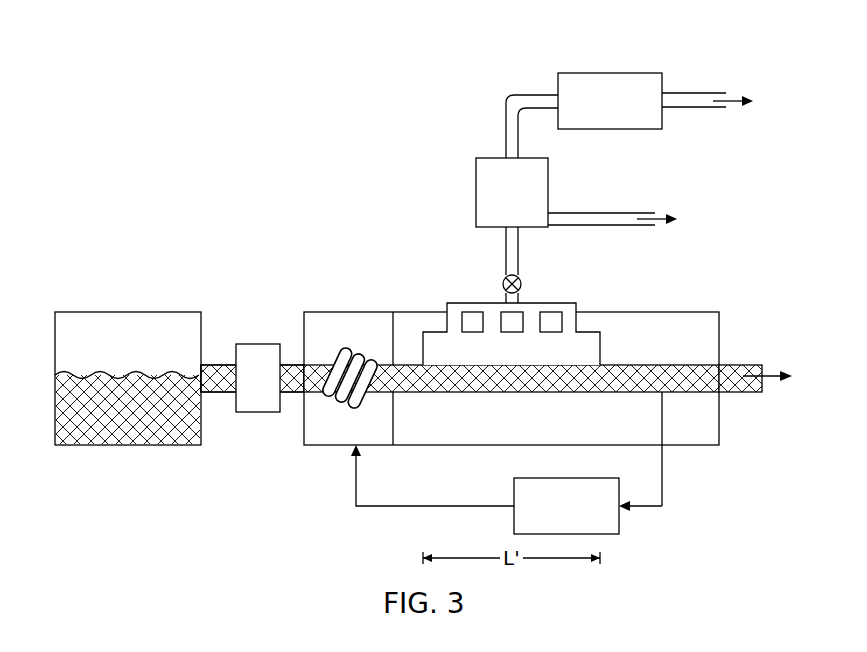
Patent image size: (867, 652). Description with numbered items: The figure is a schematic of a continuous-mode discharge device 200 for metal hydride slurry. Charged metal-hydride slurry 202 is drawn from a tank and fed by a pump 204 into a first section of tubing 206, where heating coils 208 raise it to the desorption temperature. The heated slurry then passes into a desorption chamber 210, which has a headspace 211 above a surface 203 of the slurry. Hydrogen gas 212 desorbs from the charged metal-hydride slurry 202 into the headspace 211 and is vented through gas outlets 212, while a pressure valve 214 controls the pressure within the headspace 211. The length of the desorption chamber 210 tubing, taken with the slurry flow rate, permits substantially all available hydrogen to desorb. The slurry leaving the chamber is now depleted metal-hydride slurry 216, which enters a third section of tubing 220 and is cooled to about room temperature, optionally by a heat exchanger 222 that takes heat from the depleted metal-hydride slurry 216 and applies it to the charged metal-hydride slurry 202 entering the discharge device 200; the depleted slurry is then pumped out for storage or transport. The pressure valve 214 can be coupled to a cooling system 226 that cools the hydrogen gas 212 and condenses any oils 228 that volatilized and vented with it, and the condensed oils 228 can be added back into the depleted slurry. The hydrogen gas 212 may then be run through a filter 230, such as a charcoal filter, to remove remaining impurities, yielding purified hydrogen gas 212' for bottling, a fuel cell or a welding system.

The continuous-mode discharge device 200 is at (148, 126).
The charged metal-hydride slurry 202 is at (100, 432).
The surface of the slurry 203 is at (447, 358).
The pump 204 is at (258, 344).
The first section of tubing 206 is at (296, 392).
The heating coils 208 is at (362, 355).
The desorption chamber 210 is at (600, 343).
The headspace 211 is at (529, 358).
The hydrogen gas / gas outlets 212 is at (514, 320).
The purified hydrogen gas 212' is at (707, 78).
The pressure valve 214 is at (503, 280).
The depleted metal-hydride slurry 216 is at (735, 385).
The third section of tubing 220 is at (668, 395).
The heat exchanger 222 is at (567, 478).
The cooling system 226 is at (476, 193).
The oils 228 is at (570, 222).
The filter 230 is at (612, 73).